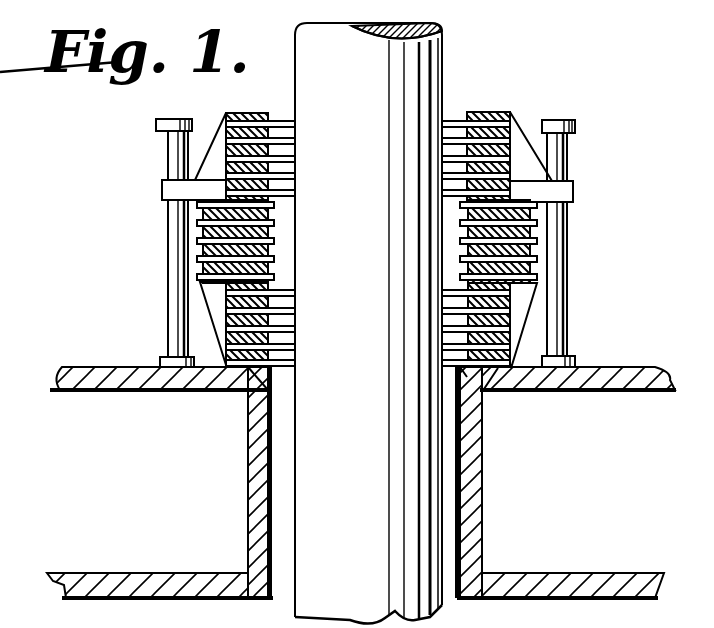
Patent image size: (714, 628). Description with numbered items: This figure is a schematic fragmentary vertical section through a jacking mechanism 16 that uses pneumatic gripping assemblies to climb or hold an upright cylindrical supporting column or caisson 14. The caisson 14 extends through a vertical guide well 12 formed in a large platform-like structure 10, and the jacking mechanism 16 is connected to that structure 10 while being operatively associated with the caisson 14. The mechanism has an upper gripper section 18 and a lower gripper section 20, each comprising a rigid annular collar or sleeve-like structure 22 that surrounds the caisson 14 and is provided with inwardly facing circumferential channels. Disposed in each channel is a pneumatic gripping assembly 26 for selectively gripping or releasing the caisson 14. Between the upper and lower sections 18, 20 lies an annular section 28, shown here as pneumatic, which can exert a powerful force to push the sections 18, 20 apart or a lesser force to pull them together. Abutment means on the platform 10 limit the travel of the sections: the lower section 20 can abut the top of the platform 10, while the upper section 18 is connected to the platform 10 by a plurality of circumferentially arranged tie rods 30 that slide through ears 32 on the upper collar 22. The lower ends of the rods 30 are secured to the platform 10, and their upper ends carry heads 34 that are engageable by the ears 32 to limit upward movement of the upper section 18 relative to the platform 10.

The platform-like structure 10 is at (567, 603).
The vertical guide well 12 is at (248, 538).
The supporting column or caisson 14 is at (440, 60).
The jacking mechanism 16 is at (582, 167).
The upper gripper section 18 is at (502, 106).
The lower gripper section 20 is at (522, 330).
The annular collar or sleeve-like structure 22 is at (512, 131).
The pneumatic gripping assembly 26 is at (297, 175).
The annular section 28 is at (278, 255).
The tie rod 30 is at (168, 262).
The ear 32 is at (160, 189).
The head 34 is at (160, 128).